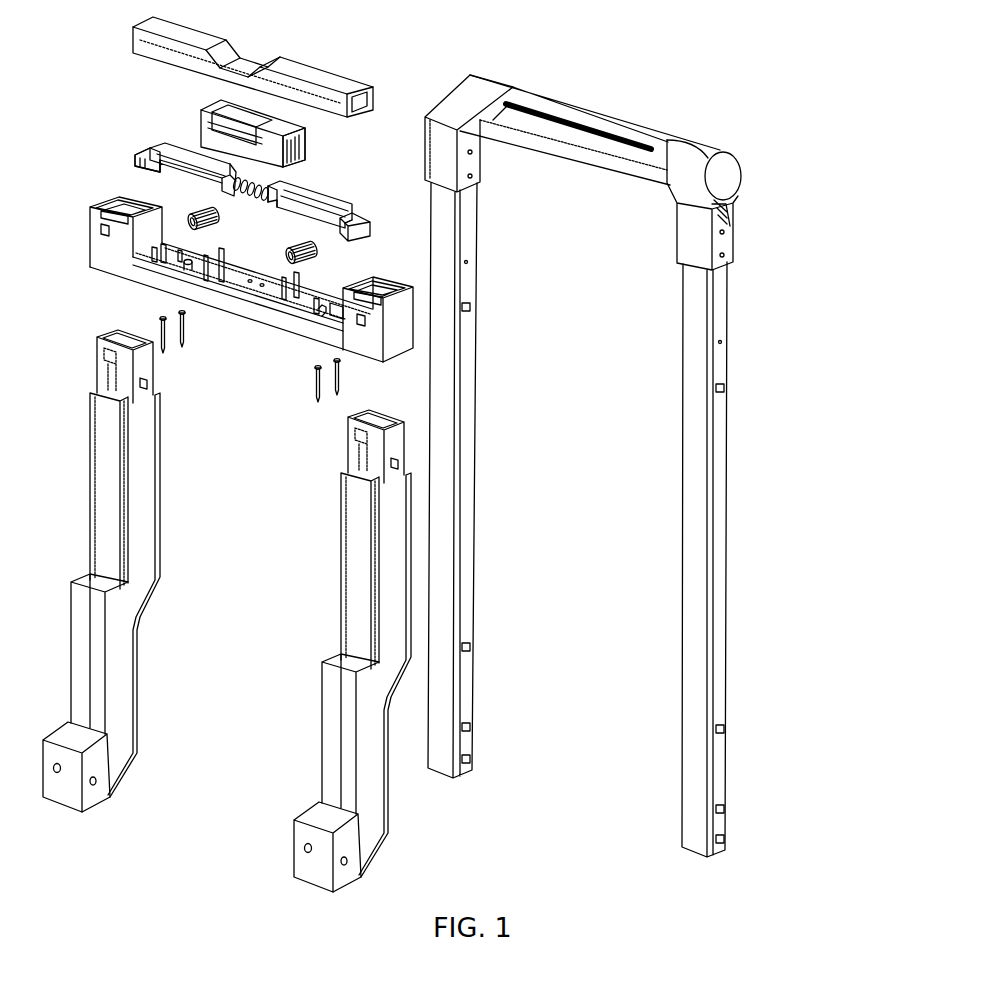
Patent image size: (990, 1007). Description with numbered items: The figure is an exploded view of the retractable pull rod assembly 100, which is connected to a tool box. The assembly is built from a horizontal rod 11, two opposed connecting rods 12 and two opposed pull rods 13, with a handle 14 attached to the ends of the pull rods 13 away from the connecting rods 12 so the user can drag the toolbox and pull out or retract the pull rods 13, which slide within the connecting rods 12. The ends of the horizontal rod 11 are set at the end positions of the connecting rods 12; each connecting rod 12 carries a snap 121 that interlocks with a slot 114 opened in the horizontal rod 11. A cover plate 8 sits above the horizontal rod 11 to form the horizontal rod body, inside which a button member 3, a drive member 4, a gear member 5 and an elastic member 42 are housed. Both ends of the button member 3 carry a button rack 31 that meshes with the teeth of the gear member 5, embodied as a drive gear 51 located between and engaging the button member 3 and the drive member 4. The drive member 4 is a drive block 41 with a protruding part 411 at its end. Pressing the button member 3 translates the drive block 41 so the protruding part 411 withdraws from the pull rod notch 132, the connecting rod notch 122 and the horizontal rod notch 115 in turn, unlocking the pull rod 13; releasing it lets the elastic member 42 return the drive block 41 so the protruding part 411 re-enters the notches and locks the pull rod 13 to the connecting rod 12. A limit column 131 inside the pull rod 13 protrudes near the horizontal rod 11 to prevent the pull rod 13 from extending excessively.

The retractable pull rod assembly 100 is at (817, 857).
The cover plate 8 is at (307, 70).
The button member 3 is at (200, 110).
The button rack 31 is at (305, 138).
The drive member 4 is at (143, 156).
The drive block 41 is at (157, 147).
The elastic member 42 is at (265, 185).
The protruding part 411 is at (353, 230).
The gear member 5 is at (190, 212).
The drive gear 51 is at (320, 248).
The horizontal rod 11 is at (152, 275).
The limit column 131 is at (97, 204).
The slot 114 is at (107, 230).
The horizontal rod notch 115 is at (143, 267).
The connecting rod 12 is at (363, 577).
The snap 121 is at (358, 438).
The connecting rod notch 122 is at (143, 380).
The handle 14 is at (600, 123).
The pull rod 13 is at (467, 372).
The pull rod notch 132 is at (472, 307).